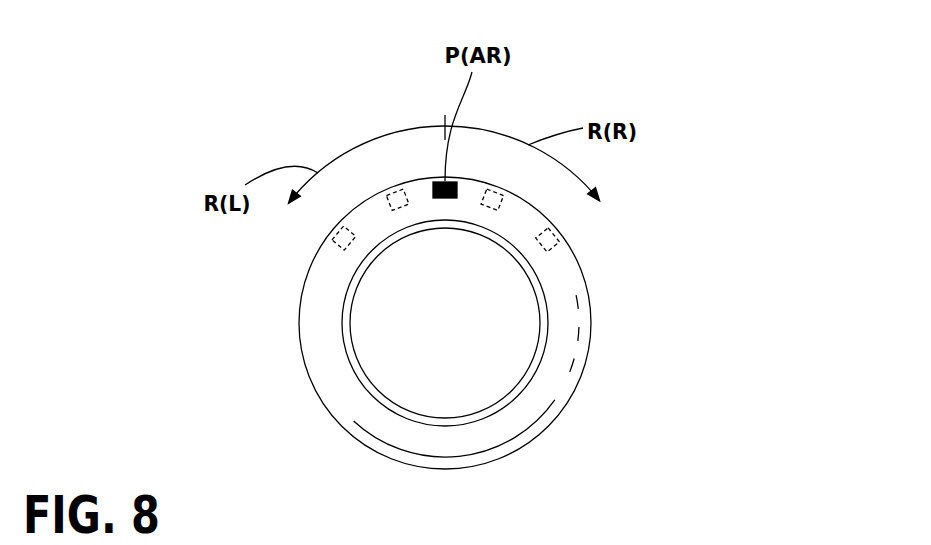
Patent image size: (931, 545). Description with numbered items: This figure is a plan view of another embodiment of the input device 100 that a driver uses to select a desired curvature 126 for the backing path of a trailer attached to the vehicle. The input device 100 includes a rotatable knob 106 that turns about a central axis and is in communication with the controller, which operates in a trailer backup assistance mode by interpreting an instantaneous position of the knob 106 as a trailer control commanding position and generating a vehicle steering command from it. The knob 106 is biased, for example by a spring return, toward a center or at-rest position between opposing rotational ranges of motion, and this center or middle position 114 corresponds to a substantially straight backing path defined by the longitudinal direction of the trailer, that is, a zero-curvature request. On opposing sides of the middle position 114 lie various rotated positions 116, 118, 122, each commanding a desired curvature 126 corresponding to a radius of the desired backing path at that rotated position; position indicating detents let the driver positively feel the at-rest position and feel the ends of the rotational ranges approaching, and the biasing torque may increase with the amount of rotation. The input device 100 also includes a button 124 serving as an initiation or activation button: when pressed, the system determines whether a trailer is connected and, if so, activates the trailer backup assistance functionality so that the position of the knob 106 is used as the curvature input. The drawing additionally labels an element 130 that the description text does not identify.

The input device 100 is at (490, 240).
The rotatable knob 106 is at (558, 380).
The middle position 114 is at (447, 182).
The rotated position 116 is at (495, 182).
The rotated position 118 is at (565, 236).
The rotated position 122 is at (348, 230).
The button 124 is at (397, 383).
The desired curvature 126 is at (398, 193).
The outer rotatable ring 130 is at (295, 278).